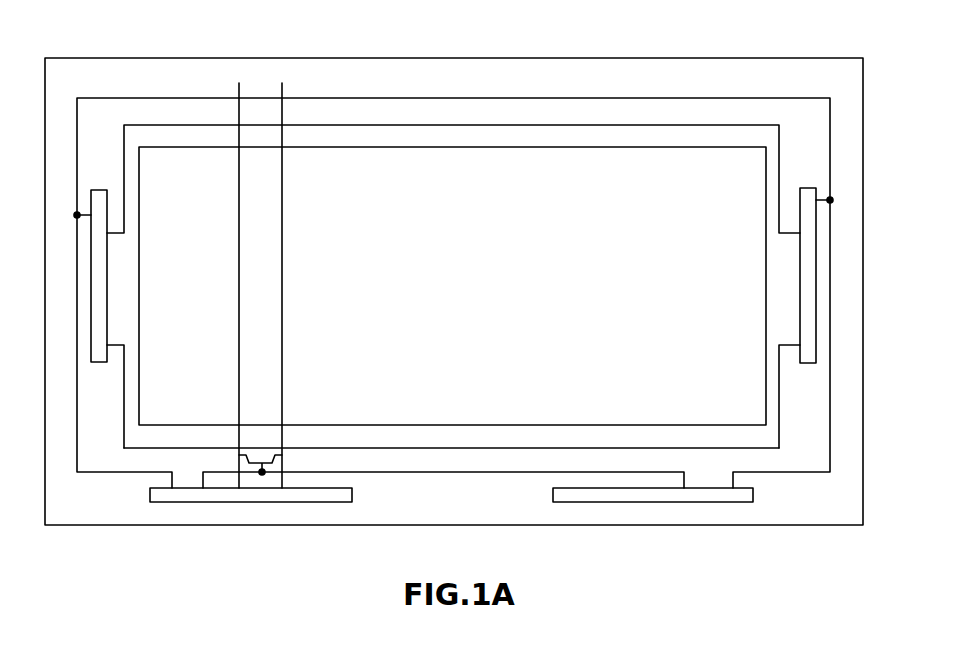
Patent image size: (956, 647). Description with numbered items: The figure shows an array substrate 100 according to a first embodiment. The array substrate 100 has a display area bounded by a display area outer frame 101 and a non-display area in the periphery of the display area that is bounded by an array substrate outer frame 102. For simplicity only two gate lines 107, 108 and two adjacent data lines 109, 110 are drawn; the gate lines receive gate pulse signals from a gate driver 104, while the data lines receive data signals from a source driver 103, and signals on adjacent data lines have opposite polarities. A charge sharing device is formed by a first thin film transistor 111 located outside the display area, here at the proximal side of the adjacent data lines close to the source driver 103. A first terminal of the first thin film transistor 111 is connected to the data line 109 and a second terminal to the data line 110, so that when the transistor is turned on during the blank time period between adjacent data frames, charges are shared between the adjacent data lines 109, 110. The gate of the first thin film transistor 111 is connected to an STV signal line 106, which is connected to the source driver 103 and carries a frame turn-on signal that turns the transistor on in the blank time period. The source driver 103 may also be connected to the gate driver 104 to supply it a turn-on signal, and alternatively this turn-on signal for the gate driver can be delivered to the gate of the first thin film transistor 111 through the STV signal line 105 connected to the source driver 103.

The array substrate 100 is at (780, 72).
The display area outer frame 101 is at (505, 150).
The array substrate outer frame 102 is at (532, 60).
The source driver 103 is at (352, 498).
The gate driver 104 is at (102, 277).
The STV signal line 105 is at (710, 70).
The STV signal line 106 is at (608, 472).
The gate line 107 is at (697, 130).
The gate line 108 is at (698, 445).
The data line 109 is at (285, 333).
The data line 110 is at (237, 332).
The first thin film transistor 111 is at (285, 460).